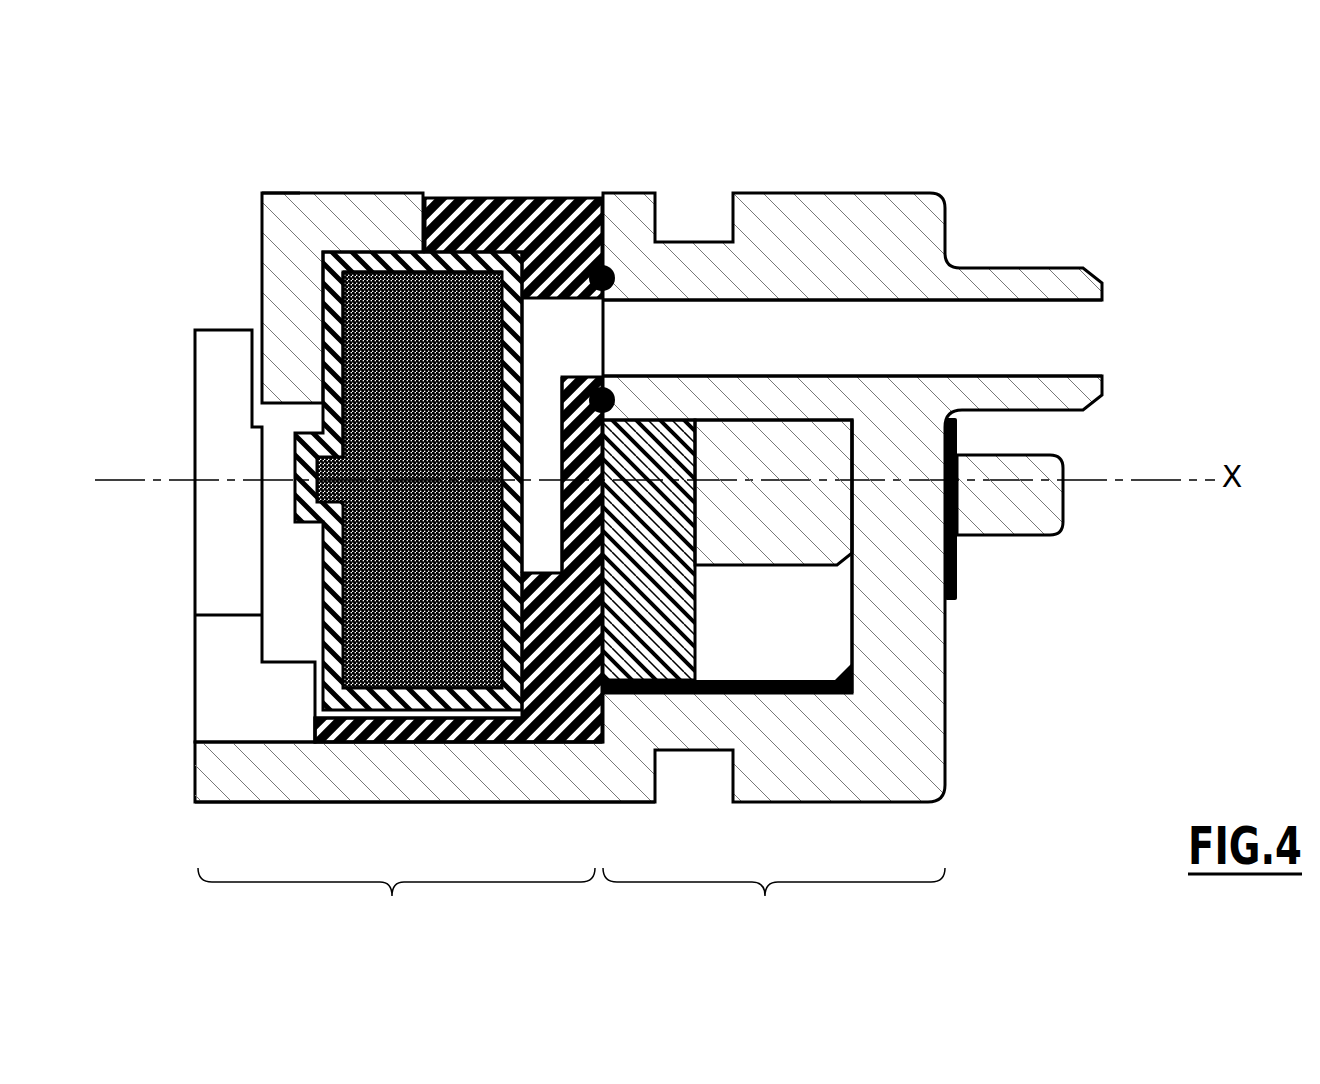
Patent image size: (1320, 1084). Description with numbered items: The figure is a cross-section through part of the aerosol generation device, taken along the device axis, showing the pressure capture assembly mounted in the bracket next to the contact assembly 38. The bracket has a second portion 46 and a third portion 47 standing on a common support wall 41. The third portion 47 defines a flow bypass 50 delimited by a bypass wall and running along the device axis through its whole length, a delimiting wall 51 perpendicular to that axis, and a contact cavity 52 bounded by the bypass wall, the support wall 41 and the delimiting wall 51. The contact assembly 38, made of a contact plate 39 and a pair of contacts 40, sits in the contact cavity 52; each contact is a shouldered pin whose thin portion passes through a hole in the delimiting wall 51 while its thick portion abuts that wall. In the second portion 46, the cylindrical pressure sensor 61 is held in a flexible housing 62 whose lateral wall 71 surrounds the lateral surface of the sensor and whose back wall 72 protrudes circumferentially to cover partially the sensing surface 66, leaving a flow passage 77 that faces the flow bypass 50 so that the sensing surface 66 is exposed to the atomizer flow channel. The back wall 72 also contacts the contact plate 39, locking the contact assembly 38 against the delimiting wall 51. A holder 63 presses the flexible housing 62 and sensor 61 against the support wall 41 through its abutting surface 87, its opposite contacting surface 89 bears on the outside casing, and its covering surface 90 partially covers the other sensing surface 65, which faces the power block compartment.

The contact assembly 38 is at (713, 590).
The contact plate 39 is at (655, 655).
The pair of contacts 40 is at (1018, 505).
The support wall 41 is at (822, 752).
The second portion 46 is at (396, 904).
The third portion 47 is at (774, 904).
The flow bypass 50 is at (1033, 347).
The delimiting wall 51 is at (960, 683).
The contact cavity 52 is at (798, 640).
The pressure sensor 61 is at (388, 650).
The flexible housing 62 is at (545, 183).
The holder 63 is at (341, 176).
The sensing surface 65 is at (298, 570).
The sensing surface 66 is at (530, 335).
The lateral wall 71 is at (418, 714).
The back wall 72 is at (627, 692).
The flow passage 77 is at (535, 440).
The abutting surface 87 is at (396, 262).
The contacting surface 89 is at (277, 193).
The covering surface 90 is at (340, 337).